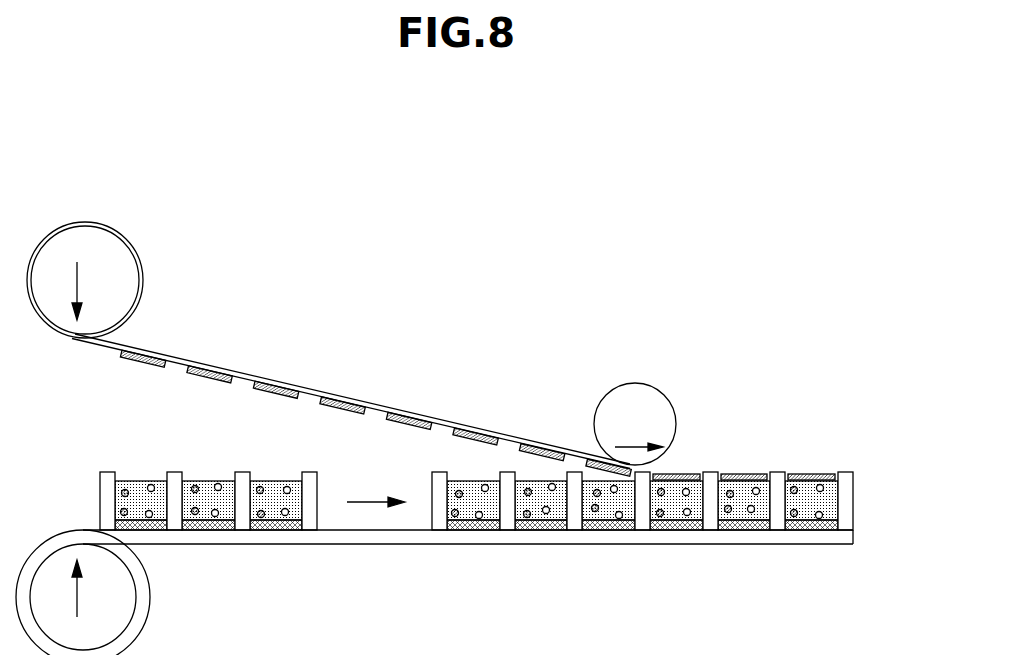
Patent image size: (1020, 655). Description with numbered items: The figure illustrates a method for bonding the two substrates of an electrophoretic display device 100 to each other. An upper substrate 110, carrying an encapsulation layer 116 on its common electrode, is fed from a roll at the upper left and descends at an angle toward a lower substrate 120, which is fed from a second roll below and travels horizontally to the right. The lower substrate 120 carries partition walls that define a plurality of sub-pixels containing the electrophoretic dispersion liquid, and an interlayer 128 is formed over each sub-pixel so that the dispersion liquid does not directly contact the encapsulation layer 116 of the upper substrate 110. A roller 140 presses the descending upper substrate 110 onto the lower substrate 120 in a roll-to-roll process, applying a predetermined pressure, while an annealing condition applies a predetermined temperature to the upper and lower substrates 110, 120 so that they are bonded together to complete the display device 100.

The electrophoretic display device 100 is at (499, 536).
The upper substrate 110 is at (432, 388).
The encapsulation layer 116 is at (143, 367).
The lower substrate 120 is at (435, 570).
The interlayer 128 is at (197, 480).
The roller 140 is at (662, 405).